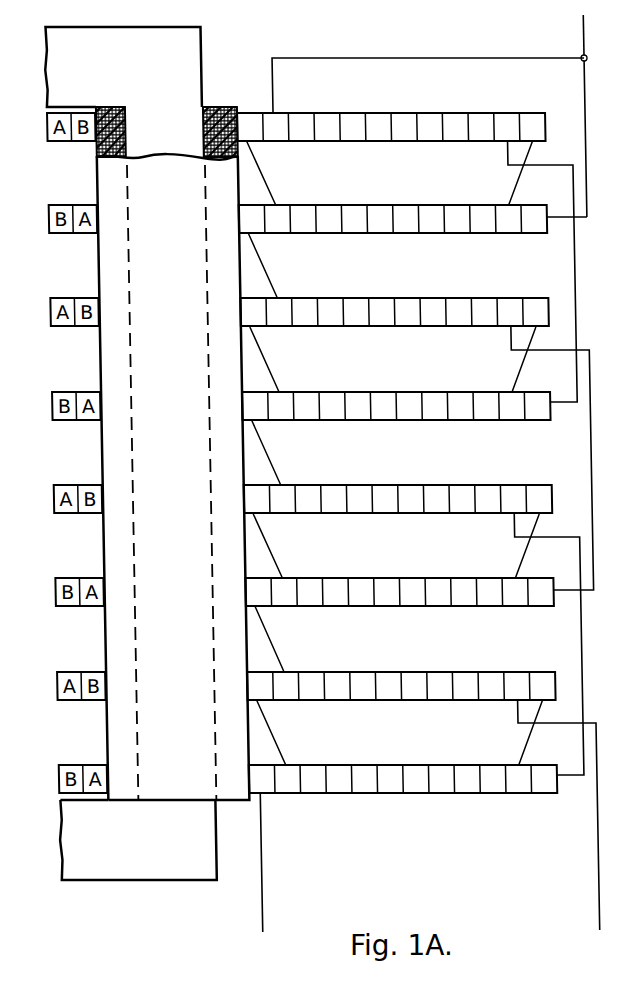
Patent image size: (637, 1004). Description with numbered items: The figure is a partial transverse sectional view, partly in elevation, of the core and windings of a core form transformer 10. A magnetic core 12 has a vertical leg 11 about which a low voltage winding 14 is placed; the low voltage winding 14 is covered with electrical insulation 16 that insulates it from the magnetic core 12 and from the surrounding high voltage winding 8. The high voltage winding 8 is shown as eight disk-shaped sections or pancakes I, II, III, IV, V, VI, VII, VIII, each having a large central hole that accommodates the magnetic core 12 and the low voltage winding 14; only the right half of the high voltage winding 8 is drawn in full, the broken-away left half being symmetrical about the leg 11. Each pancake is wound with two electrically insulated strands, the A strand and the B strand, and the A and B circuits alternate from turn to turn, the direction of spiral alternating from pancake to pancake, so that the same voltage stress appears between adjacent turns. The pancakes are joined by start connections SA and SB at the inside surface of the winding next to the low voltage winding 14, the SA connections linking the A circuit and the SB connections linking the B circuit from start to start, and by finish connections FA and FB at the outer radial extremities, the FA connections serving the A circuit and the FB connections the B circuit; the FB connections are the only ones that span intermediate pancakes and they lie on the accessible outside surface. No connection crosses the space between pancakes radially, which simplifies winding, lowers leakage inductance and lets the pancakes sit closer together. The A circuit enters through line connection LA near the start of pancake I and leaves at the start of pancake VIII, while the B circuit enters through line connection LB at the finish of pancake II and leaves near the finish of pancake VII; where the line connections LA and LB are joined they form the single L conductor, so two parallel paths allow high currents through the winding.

The high voltage winding 8 is at (412, 443).
The core type transformer 10 is at (146, 441).
The leg 11 is at (134, 154).
The magnetic core 12 is at (201, 66).
The low voltage winding 14 is at (216, 110).
The electrical insulation 16 is at (108, 107).
The start connections of the A circuit SA is at (263, 276).
The start connections of the B circuit SB is at (262, 183).
The finish connections of the A circuit FA is at (510, 183).
The finish connections of the B circuit FB is at (582, 453).
The A circuit line connection LA is at (446, 57).
The B circuit line connection LB is at (582, 88).
The L conductor L is at (582, 41).
The pancake I is at (565, 136).
The pancake II is at (565, 215).
The pancake III is at (565, 321).
The pancake IV is at (567, 395).
The pancake V is at (564, 510).
The pancake VI is at (566, 588).
The pancake VII is at (568, 696).
The pancake VIII is at (575, 803).